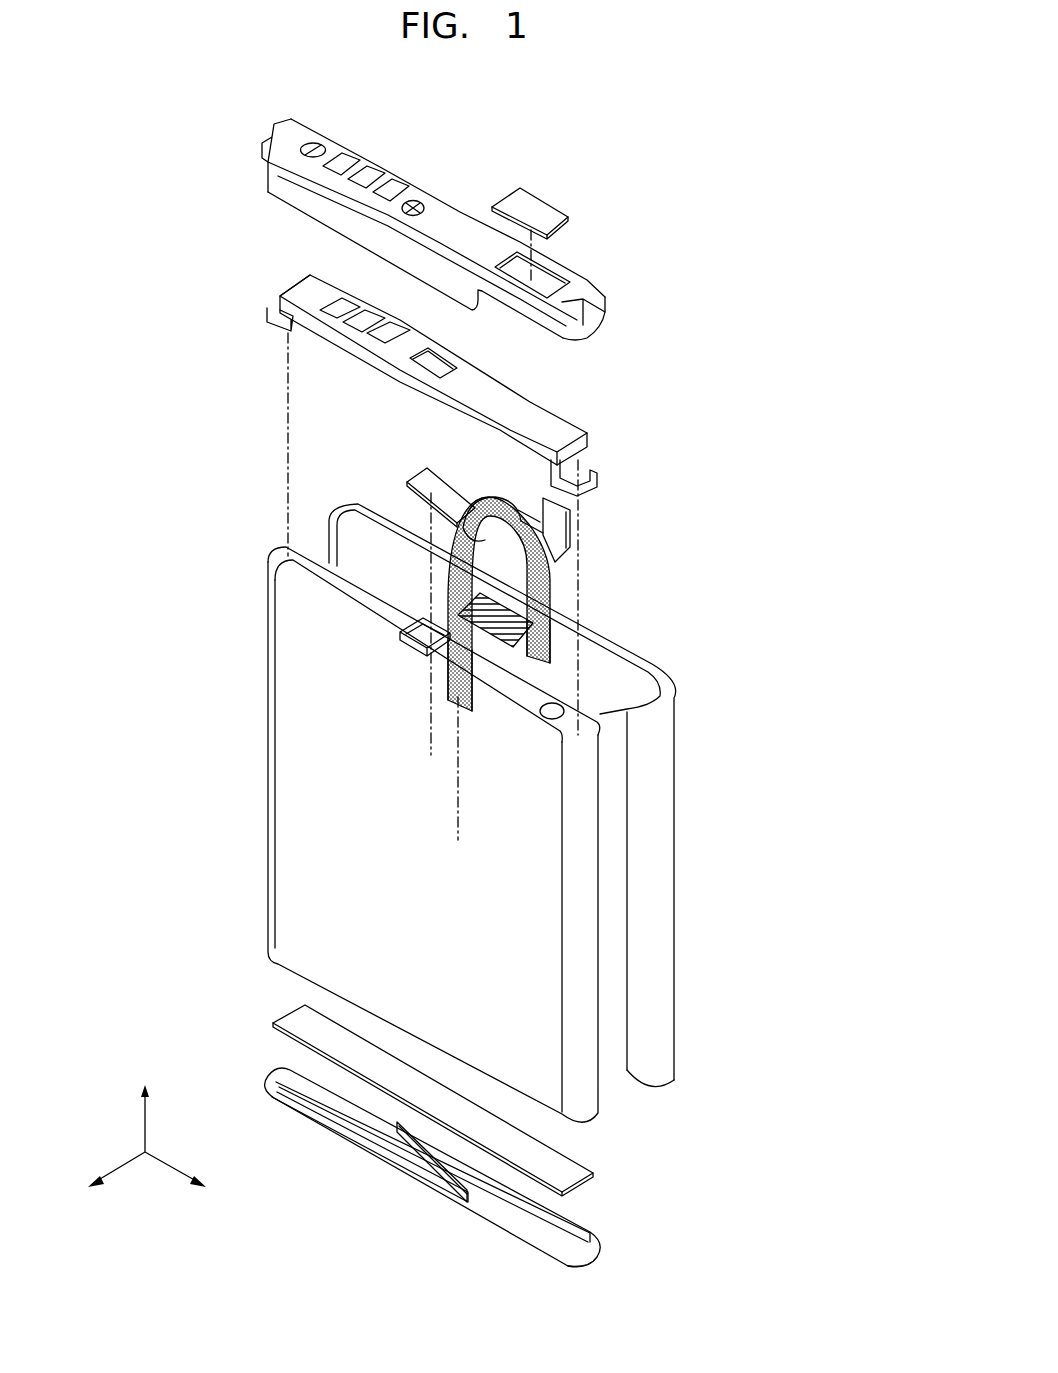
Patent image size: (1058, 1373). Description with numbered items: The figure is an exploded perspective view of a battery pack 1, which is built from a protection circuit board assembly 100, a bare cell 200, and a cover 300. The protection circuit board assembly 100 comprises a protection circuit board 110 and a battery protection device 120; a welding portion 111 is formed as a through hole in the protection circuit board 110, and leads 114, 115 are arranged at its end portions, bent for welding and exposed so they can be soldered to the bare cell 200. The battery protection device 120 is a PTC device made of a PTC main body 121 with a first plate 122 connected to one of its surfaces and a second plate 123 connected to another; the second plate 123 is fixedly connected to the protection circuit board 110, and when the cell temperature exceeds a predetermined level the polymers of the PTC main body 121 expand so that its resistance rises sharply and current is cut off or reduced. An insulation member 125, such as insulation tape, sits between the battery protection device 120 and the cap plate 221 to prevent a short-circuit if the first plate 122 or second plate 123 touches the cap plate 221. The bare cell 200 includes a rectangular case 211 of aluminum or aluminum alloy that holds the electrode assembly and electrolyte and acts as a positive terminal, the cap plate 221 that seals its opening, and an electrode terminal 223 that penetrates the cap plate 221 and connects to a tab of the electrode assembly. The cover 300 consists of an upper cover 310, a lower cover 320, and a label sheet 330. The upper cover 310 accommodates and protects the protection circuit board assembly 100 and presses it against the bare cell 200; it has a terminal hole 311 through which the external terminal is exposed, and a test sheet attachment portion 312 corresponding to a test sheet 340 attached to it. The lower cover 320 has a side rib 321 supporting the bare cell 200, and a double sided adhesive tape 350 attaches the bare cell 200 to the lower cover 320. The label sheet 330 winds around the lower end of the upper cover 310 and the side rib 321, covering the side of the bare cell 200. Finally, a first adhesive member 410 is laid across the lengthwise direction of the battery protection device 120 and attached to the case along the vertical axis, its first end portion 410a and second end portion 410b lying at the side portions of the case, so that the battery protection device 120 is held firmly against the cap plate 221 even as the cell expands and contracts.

The battery pack 1 is at (653, 123).
The protection circuit board assembly 100 is at (598, 430).
The protection circuit board 110 is at (300, 284).
The welding portion 111 is at (438, 366).
The lead 114 is at (278, 318).
The lead 115 is at (600, 481).
The battery protection device 120 is at (411, 479).
The PTC main body 121 is at (488, 500).
The first plate 122 is at (430, 469).
The second plate 123 is at (563, 522).
The insulation member 125 is at (513, 653).
The bare cell 200 is at (268, 783).
The case 211 is at (282, 866).
The cap plate 221 is at (312, 583).
The electrode terminal 223 is at (427, 633).
The cover 300 is at (802, 306).
The upper cover 310 is at (620, 318).
The terminal hole 311 is at (371, 176).
The test sheet attachment portion 312 is at (545, 281).
The lower cover 320 is at (605, 1255).
The side rib 321 is at (453, 1154).
The label sheet 330 is at (658, 878).
The test sheet 340 is at (537, 206).
The double sided adhesive tape 350 is at (576, 1173).
The first adhesive member 410 is at (547, 594).
The first end portion 410a is at (452, 694).
The second end portion 410b is at (548, 638).